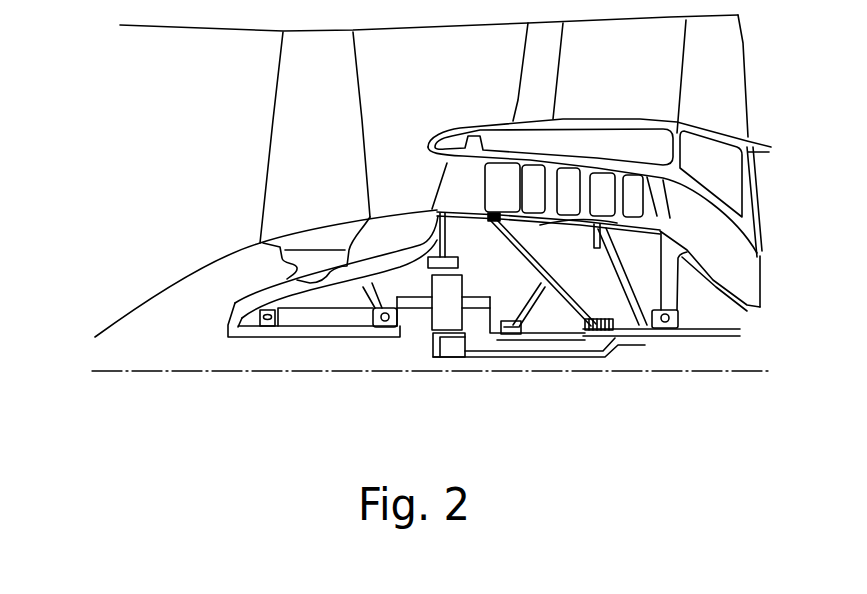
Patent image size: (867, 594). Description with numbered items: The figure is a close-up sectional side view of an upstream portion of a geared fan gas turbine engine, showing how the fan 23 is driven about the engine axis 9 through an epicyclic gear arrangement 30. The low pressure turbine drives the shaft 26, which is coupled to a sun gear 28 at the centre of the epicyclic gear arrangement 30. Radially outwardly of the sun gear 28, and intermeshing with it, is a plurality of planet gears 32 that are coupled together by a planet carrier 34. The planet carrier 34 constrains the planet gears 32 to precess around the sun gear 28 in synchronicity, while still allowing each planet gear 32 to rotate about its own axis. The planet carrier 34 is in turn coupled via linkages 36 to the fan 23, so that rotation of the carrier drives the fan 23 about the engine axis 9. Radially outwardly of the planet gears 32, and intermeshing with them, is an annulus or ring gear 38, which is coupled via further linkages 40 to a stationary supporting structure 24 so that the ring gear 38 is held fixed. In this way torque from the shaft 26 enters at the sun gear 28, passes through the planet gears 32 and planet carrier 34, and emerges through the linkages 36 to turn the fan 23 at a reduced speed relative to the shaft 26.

The engine axis 9 is at (252, 372).
The fan 23 is at (288, 138).
The stationary supporting structure 24 is at (452, 182).
The shaft 26 is at (572, 357).
The sun gear 28 is at (447, 343).
The epicyclic gear arrangement 30 is at (408, 311).
The planet gears 32 is at (427, 331).
The planet carrier 34 is at (479, 334).
The linkages 36 is at (403, 322).
The ring gear 38 is at (430, 266).
The linkages 40 is at (450, 245).